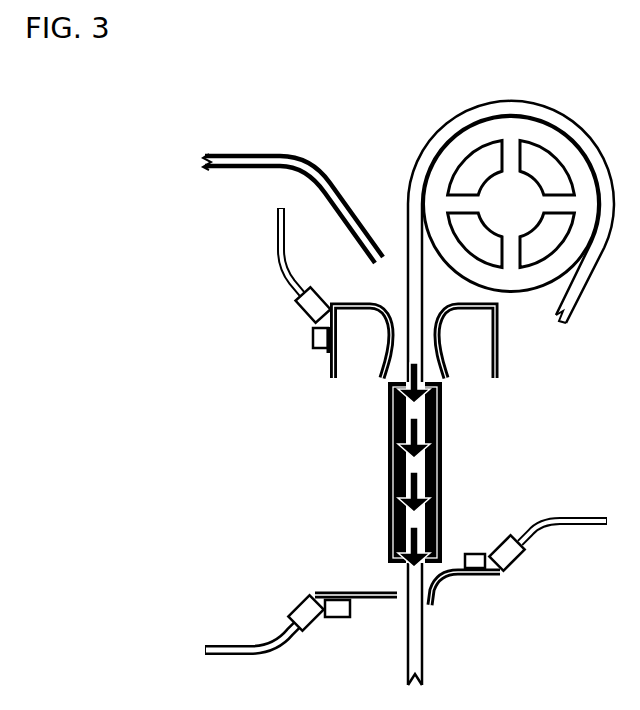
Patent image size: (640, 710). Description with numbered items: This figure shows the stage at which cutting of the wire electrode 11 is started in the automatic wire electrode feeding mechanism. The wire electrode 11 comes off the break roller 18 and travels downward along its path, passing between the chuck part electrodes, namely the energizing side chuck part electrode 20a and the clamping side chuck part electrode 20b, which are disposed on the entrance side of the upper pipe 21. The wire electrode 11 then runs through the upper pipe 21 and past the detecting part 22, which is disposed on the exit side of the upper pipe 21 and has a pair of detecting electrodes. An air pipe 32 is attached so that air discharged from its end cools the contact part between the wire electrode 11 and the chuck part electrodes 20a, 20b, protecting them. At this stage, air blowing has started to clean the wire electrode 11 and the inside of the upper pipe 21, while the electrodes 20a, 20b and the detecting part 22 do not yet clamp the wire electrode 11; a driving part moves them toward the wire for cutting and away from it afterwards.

The wire electrode 11 is at (408, 233).
The break roller 18 is at (512, 130).
The energizing side chuck part electrode 20a is at (328, 368).
The clamping side chuck part electrode 20b is at (502, 372).
The upper pipe 21 is at (443, 525).
The detecting part 22 is at (372, 597).
The air pipe 32 is at (268, 152).